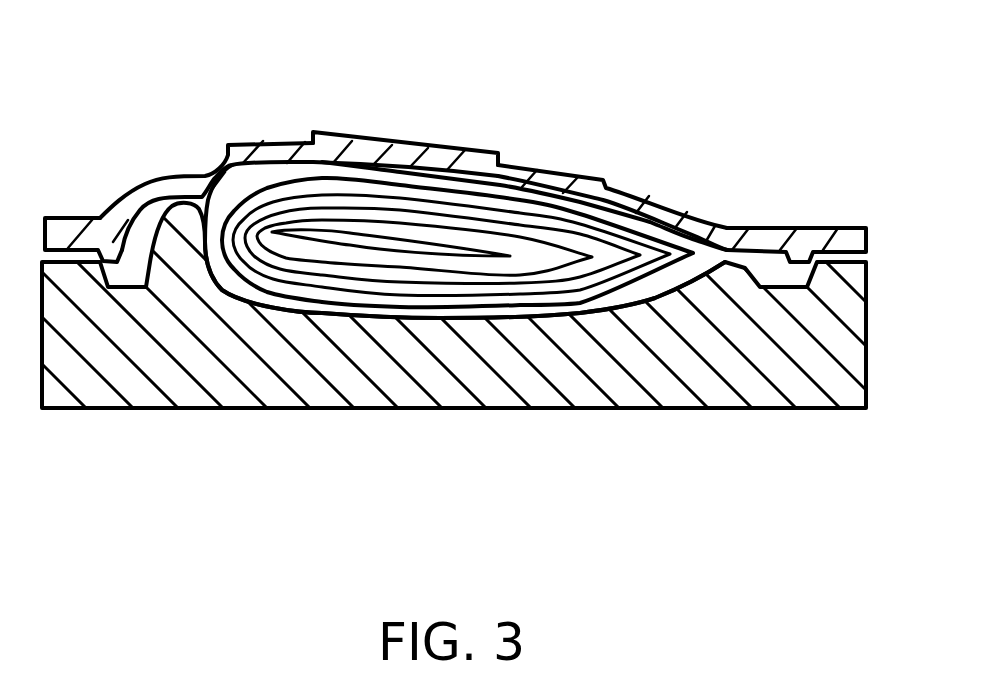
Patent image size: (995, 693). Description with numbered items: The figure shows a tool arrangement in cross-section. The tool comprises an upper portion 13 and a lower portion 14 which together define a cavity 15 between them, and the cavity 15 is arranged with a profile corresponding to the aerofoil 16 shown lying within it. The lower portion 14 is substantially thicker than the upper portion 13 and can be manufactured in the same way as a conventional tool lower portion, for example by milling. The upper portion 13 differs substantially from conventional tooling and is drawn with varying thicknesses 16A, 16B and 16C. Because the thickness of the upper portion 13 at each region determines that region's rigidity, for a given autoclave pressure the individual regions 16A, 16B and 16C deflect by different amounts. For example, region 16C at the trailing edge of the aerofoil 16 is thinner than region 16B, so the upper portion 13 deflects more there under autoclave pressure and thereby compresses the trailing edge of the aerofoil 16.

The upper portion 13 is at (810, 228).
The lower portion 14 is at (812, 410).
The cavity 15 is at (620, 217).
The aerofoil 16 is at (536, 282).
The thickness region 16A is at (247, 141).
The thickness region 16B is at (422, 142).
The thickness region 16C is at (686, 210).